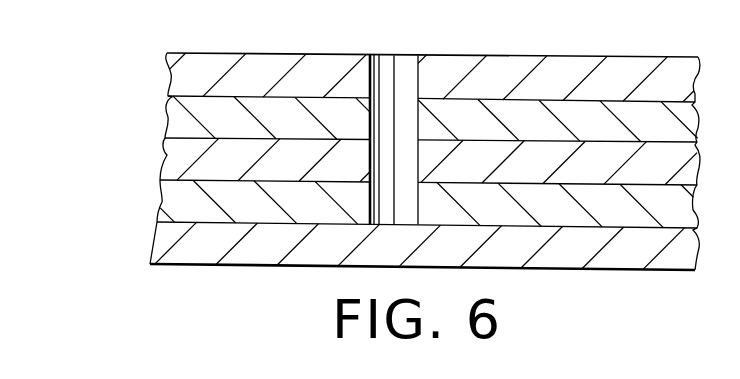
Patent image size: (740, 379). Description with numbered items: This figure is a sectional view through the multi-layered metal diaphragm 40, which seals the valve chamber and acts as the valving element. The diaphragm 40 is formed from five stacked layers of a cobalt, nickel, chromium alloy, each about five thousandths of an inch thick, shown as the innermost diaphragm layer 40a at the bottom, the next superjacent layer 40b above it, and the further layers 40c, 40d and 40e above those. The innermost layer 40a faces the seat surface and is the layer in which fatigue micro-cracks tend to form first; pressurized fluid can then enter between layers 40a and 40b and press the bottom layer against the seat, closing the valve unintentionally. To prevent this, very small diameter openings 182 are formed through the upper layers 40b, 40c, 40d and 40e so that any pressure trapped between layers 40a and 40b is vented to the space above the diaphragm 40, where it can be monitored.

The diaphragm member 40 is at (146, 266).
The innermost diaphragm layer 40a is at (157, 247).
The superjacent diaphragm layer 40b is at (168, 203).
The diaphragm layer 40c is at (175, 163).
The diaphragm layer 40d is at (175, 120).
The diaphragm layer 40e is at (180, 78).
The openings 182 is at (418, 84).